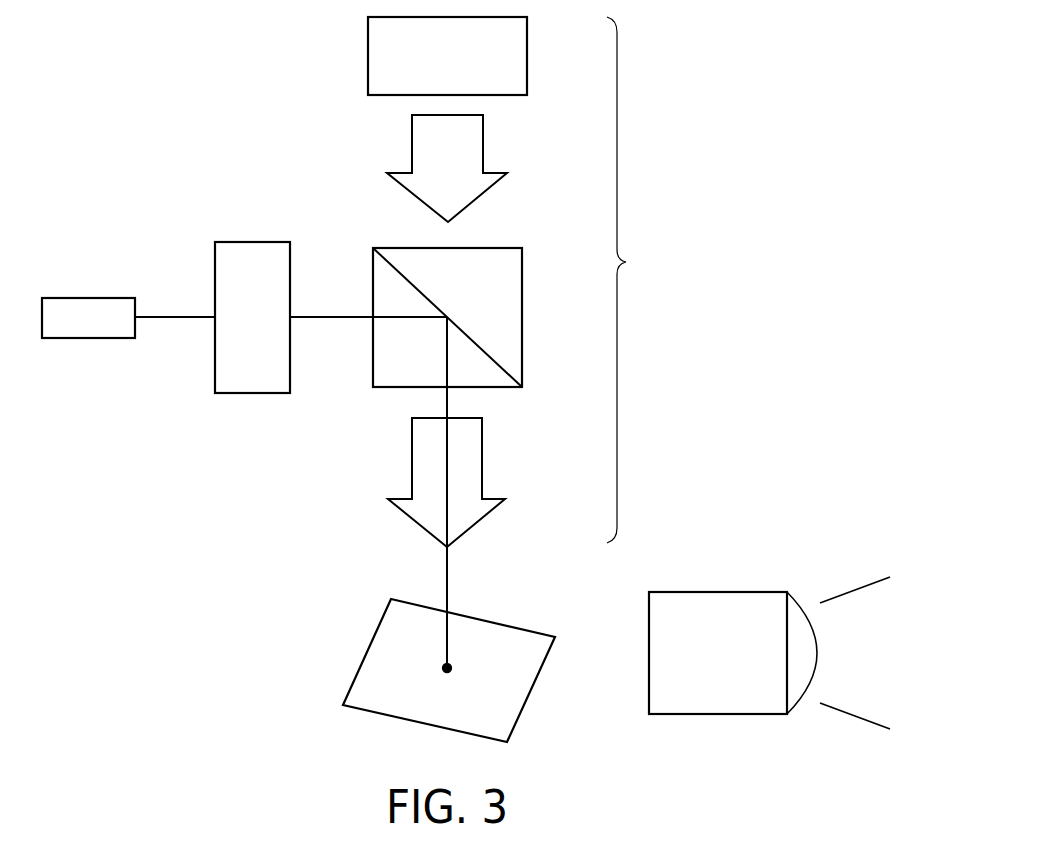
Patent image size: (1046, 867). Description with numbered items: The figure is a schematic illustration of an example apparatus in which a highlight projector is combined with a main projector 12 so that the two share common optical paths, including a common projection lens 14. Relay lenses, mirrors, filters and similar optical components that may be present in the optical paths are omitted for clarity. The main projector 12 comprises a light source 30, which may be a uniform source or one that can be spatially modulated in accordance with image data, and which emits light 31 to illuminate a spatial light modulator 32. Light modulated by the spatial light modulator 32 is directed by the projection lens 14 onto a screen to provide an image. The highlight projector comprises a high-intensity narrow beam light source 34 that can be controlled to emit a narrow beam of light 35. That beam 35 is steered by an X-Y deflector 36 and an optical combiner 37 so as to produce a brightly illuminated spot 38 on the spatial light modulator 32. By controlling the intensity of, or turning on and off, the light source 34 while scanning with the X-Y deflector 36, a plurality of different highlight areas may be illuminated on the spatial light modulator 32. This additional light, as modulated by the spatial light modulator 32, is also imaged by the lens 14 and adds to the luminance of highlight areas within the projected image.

The main projector 12 is at (627, 262).
The projection lens 14 is at (745, 591).
The light source 30 is at (520, 55).
The light 31 is at (484, 143).
The spatial light modulator 32 is at (388, 660).
The high-intensity narrow beam light source 34 is at (92, 298).
The narrow beam of light 35 is at (175, 315).
The X-Y deflector 36 is at (252, 242).
The optical combiner 37 is at (522, 290).
The brightly illuminated spot 38 is at (452, 669).